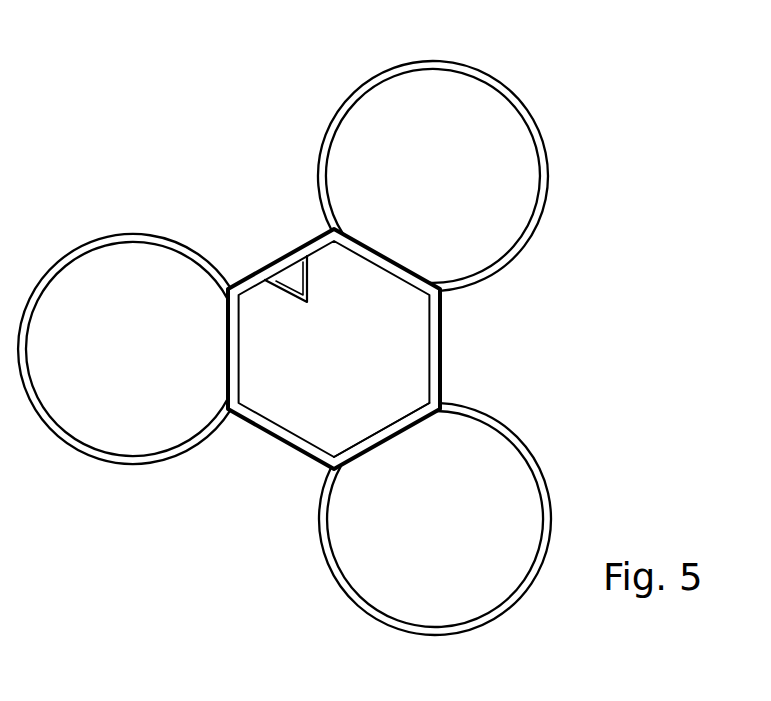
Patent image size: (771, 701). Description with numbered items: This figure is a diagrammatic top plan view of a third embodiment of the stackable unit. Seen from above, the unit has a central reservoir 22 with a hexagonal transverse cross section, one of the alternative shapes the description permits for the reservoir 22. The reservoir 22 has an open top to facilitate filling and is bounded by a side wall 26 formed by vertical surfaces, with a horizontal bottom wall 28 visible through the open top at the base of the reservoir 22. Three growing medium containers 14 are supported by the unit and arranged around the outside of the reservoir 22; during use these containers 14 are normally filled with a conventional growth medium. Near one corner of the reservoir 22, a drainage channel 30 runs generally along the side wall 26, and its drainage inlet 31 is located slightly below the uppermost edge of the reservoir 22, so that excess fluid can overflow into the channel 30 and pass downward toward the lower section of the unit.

The growing medium container 14 is at (503, 80).
The reservoir 22 is at (345, 367).
The side wall 26 is at (440, 345).
The bottom wall 28 is at (327, 413).
The drainage channel 30 is at (290, 295).
The drainage inlet 31 is at (288, 272).